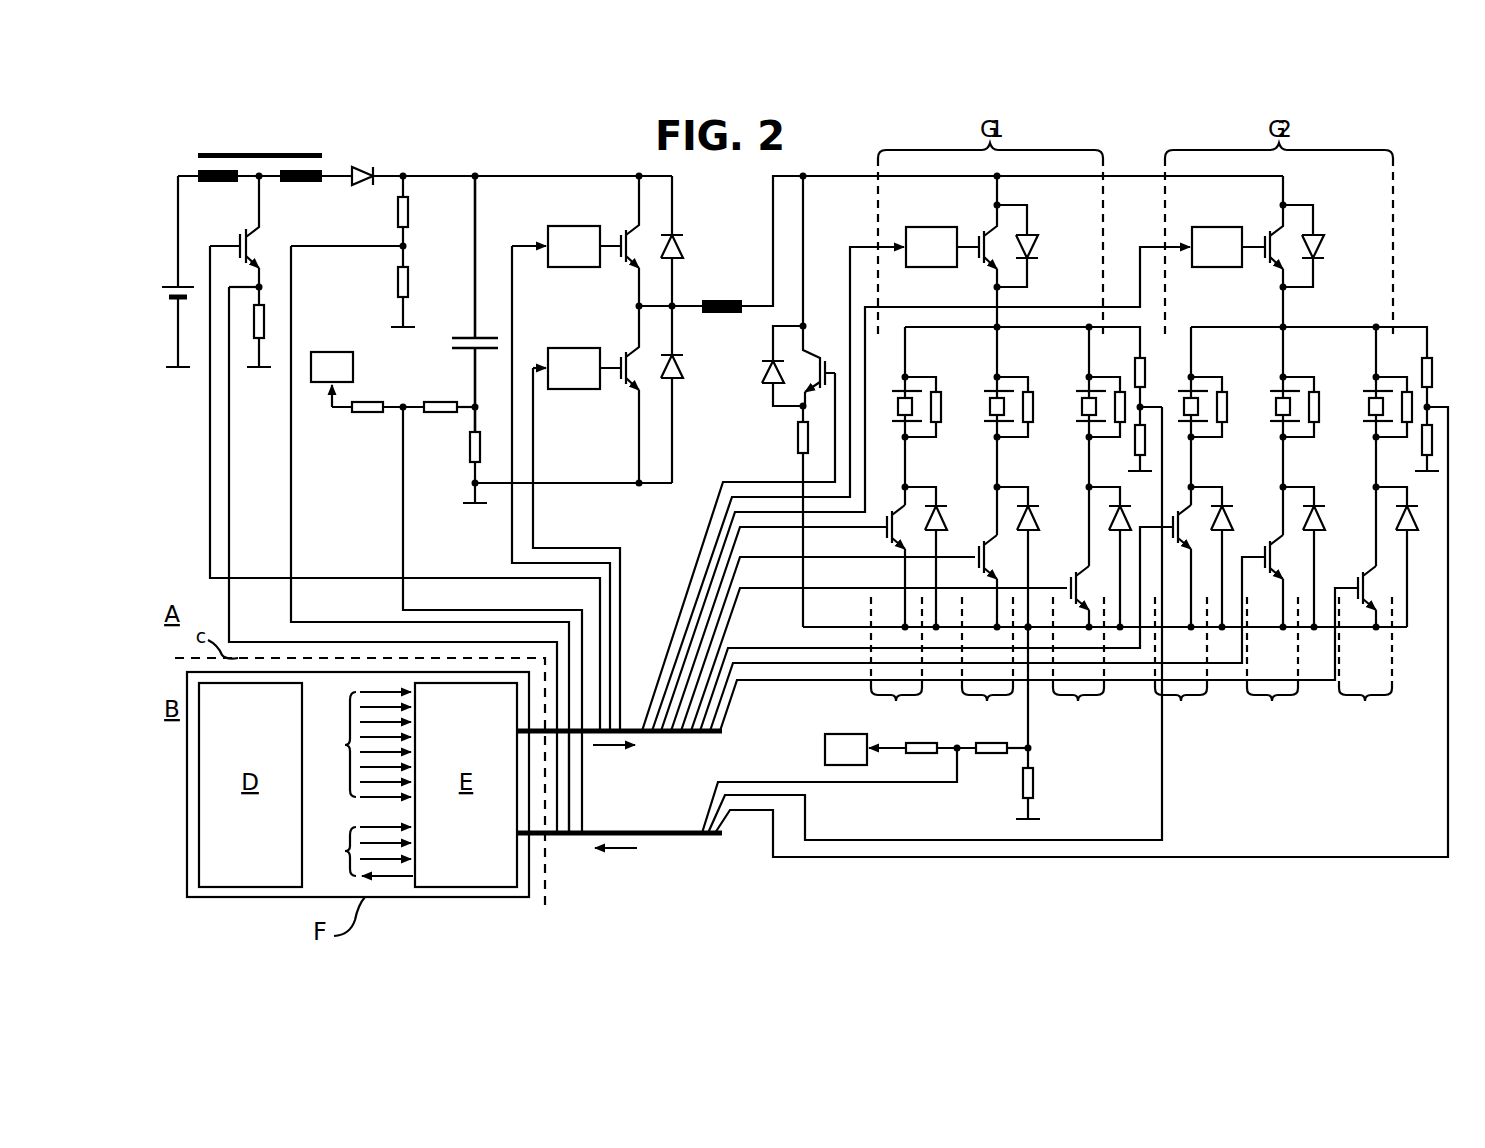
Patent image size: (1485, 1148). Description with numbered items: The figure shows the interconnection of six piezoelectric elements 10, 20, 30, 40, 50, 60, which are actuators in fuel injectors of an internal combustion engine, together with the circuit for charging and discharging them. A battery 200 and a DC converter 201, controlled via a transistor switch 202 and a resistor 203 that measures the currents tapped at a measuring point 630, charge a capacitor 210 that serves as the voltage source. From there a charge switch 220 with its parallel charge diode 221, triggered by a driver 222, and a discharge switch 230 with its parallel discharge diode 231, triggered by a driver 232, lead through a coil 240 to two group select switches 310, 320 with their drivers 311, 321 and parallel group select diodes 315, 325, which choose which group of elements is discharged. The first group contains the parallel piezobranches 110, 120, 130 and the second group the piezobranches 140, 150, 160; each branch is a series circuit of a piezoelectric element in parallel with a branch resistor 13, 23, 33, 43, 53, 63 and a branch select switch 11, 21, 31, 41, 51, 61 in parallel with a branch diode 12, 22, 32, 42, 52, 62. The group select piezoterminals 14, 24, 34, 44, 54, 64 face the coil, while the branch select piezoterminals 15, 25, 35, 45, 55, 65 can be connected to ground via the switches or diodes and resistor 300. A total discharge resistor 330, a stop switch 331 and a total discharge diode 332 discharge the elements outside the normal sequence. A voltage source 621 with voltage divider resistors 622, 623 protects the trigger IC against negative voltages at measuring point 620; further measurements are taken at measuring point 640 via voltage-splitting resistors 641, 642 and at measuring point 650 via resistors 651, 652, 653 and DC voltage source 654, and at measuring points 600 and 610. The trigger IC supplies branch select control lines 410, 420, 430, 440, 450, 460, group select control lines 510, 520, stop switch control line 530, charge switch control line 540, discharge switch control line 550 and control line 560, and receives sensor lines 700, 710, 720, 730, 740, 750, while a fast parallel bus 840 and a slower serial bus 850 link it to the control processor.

The battery 200 is at (188, 285).
The DC converter 201 is at (256, 148).
The transistor switch 202 is at (262, 246).
The resistor 203 is at (266, 322).
The capacitor 210 is at (448, 343).
The charge switch 220 is at (626, 238).
The charge diode 221 is at (682, 244).
The driver 222 is at (572, 227).
The discharge switch 230 is at (626, 360).
The discharge diode 231 is at (684, 375).
The driver 232 is at (572, 349).
The coil 240 is at (724, 300).
The resistor 300 is at (1035, 784).
The group select switch 310 is at (975, 238).
The driver 311 is at (934, 227).
The group select diode 315 is at (1034, 246).
The group select switch 320 is at (1262, 238).
The driver 321 is at (1220, 227).
The group select diode 325 is at (1289, 246).
The total discharge resistor 330 is at (798, 437).
The stop switch 331 is at (826, 362).
The total discharge diode 332 is at (762, 372).
The branch select control line 410 is at (706, 586).
The branch select control line 420 is at (699, 611).
The branch select control line 430 is at (694, 646).
The branch select control line 440 is at (760, 650).
The branch select control line 450 is at (804, 665).
The branch select control line 460 is at (850, 681).
The group select control line 510 is at (714, 536).
The group select control line 520 is at (706, 563).
The stop switch control line 530 is at (716, 508).
The charge switch control line 540 is at (510, 538).
The discharge switch control line 550 is at (534, 518).
The control line 560 is at (208, 575).
The measuring point 600 is at (1138, 404).
The measuring point 610 is at (1430, 404).
The measuring point 620 is at (957, 742).
The voltage source 621 is at (848, 766).
The voltage divider resistor 622 is at (920, 754).
The voltage divider resistor 623 is at (996, 754).
The measuring point 630 is at (262, 287).
The measuring point 640 is at (408, 250).
The voltage-splitting resistor 641 is at (410, 218).
The voltage-splitting resistor 642 is at (410, 292).
The measuring point 650 is at (401, 406).
The resistor 651 is at (472, 452).
The resistor 652 is at (368, 412).
The resistor 653 is at (441, 412).
The DC voltage source 654 is at (332, 348).
The sensor line 700 is at (1164, 815).
The sensor line 710 is at (1447, 815).
The sensor line 720 is at (712, 812).
The sensor line 730 is at (560, 765).
The sensor line 740 is at (571, 790).
The sensor line 750 is at (584, 815).
The fast parallel bus 840 is at (360, 744).
The slower serial bus 850 is at (361, 851).
The piezoelectric element 10 is at (897, 404).
The branch select switch 11 is at (885, 532).
The branch diode 12 is at (948, 517).
The branch resistor 13 is at (941, 413).
The group select piezoterminal 14 is at (915, 388).
The branch select piezoterminal 15 is at (895, 425).
The piezoelectric element 20 is at (989, 404).
The branch select switch 21 is at (978, 548).
The branch diode 22 is at (1040, 517).
The branch resistor 23 is at (1033, 413).
The group select piezoterminal 24 is at (1007, 388).
The branch select piezoterminal 25 is at (987, 425).
The piezoelectric element 30 is at (1081, 404).
The branch select switch 31 is at (1068, 578).
The branch diode 32 is at (1130, 517).
The branch resistor 33 is at (1125, 432).
The group select piezoterminal 34 is at (1099, 388).
The branch select piezoterminal 35 is at (1079, 425).
The piezoelectric element 40 is at (1183, 404).
The branch select switch 41 is at (1176, 545).
The branch diode 42 is at (1234, 517).
The branch resistor 43 is at (1227, 413).
The group select piezoterminal 44 is at (1201, 388).
The branch select piezoterminal 45 is at (1181, 425).
The piezoelectric element 50 is at (1275, 404).
The branch select switch 51 is at (1264, 548).
The branch diode 52 is at (1326, 517).
The branch resistor 53 is at (1319, 413).
The group select piezoterminal 54 is at (1295, 388).
The branch select piezoterminal 55 is at (1275, 425).
The piezoelectric element 60 is at (1368, 404).
The branch select switch 61 is at (1355, 578).
The branch diode 62 is at (1420, 519).
The branch resistor 63 is at (1411, 432).
The group select piezoterminal 64 is at (1388, 388).
The branch select piezoterminal 65 is at (1367, 425).
The piezobranch 110 is at (896, 662).
The piezobranch 120 is at (987, 662).
The piezobranch 130 is at (1078, 662).
The piezobranch 140 is at (1181, 662).
The piezobranch 150 is at (1272, 662).
The piezobranch 160 is at (1365, 662).